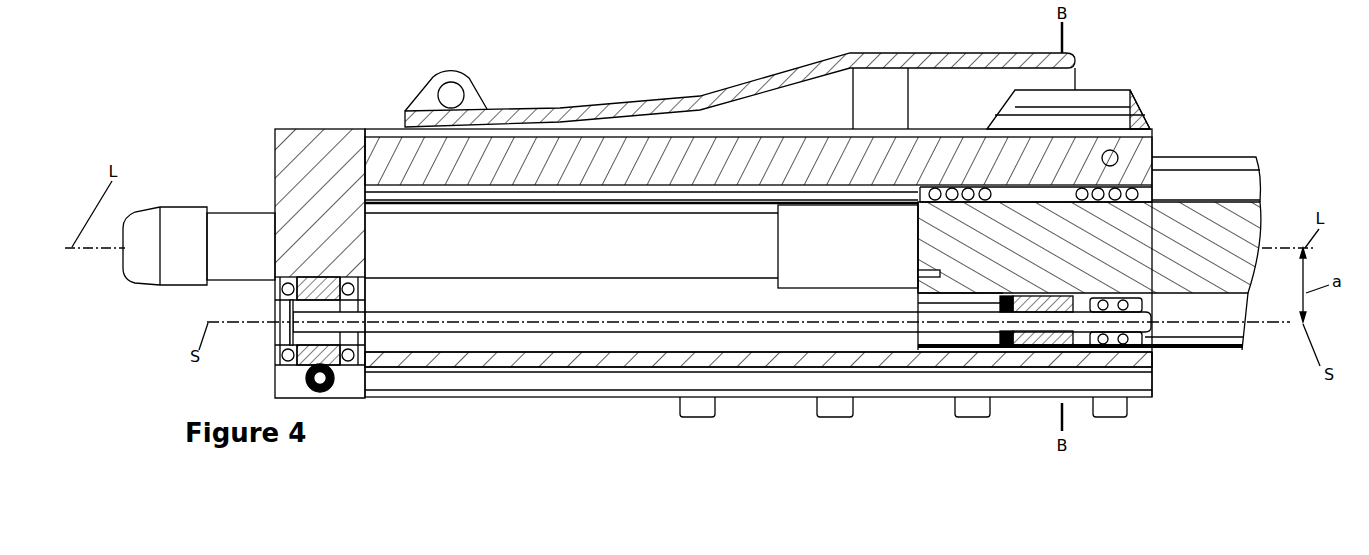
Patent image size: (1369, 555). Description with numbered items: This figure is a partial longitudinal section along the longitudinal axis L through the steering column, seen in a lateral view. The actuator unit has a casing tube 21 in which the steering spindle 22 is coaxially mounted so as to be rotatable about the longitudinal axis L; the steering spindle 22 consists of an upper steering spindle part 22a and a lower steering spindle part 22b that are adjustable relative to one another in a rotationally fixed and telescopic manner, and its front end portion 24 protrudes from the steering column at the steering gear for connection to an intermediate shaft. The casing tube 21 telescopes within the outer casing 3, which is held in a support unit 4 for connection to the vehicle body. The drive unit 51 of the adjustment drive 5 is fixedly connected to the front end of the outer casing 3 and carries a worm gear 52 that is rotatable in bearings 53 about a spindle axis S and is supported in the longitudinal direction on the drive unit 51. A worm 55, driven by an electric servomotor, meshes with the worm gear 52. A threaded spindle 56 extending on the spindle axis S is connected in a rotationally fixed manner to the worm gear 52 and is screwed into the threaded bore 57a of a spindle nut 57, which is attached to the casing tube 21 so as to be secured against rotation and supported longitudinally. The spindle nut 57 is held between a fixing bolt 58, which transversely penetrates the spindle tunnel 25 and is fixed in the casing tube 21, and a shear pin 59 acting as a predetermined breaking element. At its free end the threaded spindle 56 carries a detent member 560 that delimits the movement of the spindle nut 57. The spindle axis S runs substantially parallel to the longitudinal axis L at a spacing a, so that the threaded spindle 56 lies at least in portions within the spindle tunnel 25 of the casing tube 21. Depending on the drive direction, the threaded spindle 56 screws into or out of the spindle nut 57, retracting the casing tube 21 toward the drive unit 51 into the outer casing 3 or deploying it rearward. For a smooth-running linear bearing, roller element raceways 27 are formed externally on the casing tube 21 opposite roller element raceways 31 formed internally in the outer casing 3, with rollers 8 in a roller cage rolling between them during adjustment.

The outer casing 3 is at (532, 148).
The support unit 4 is at (935, 62).
The adjustment drive 5 is at (267, 353).
The rollers 8 is at (1140, 130).
The casing tube 21 is at (1218, 183).
The steering spindle 22 is at (740, 258).
The upper steering spindle part 22a is at (830, 233).
The lower steering spindle part 22b is at (677, 260).
The front end portion 24 is at (182, 235).
The spindle tunnel 25 is at (1210, 338).
The roller element raceways 27 is at (1188, 200).
The roller element raceways 31 is at (1050, 182).
The drive unit 51 is at (306, 143).
The worm gear 52 is at (278, 341).
The bearings 53 is at (278, 299).
The worm 55 is at (306, 377).
The threaded spindle 56 is at (497, 333).
The spindle nut 57 is at (1087, 342).
The threaded bore 57a is at (1033, 348).
The fixing bolt 58 is at (965, 357).
The shear pin 59 is at (1148, 300).
The detent member 560 is at (1127, 368).